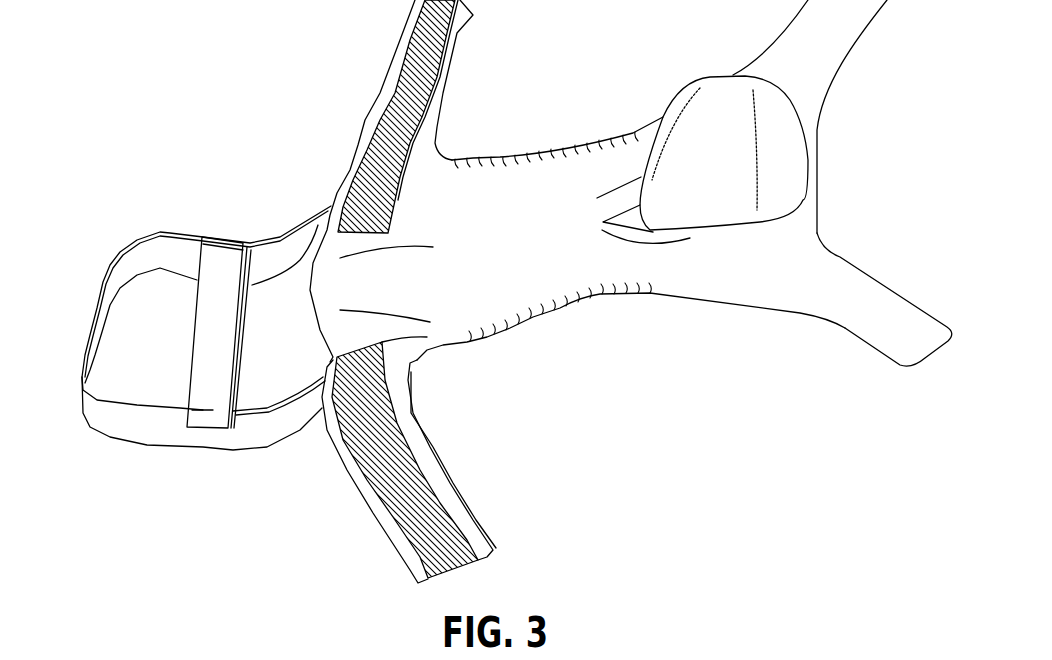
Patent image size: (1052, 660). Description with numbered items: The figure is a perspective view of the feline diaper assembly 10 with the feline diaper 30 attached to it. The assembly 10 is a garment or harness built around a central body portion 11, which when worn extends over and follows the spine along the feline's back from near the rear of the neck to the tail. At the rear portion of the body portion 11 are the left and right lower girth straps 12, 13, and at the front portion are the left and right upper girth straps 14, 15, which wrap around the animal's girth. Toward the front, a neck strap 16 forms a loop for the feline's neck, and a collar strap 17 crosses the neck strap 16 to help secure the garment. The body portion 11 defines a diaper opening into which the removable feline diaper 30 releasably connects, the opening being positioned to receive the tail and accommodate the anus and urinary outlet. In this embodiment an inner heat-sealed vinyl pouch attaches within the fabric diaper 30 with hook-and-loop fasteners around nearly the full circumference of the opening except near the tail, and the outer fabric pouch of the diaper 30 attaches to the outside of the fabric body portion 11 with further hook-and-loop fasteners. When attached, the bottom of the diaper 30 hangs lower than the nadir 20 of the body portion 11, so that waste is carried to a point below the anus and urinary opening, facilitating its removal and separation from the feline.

The feline diaper assembly 10 is at (236, 26).
The central body portion 11 is at (546, 249).
The left lower girth strap 12 is at (838, 37).
The right lower girth strap 13 is at (893, 327).
The left upper girth strap 14 is at (387, 127).
The right upper girth strap 15 is at (388, 488).
The neck strap 16 is at (101, 280).
The collar strap 17 is at (232, 347).
The nadir of the body portion 20 is at (708, 252).
The feline diaper 30 is at (732, 171).